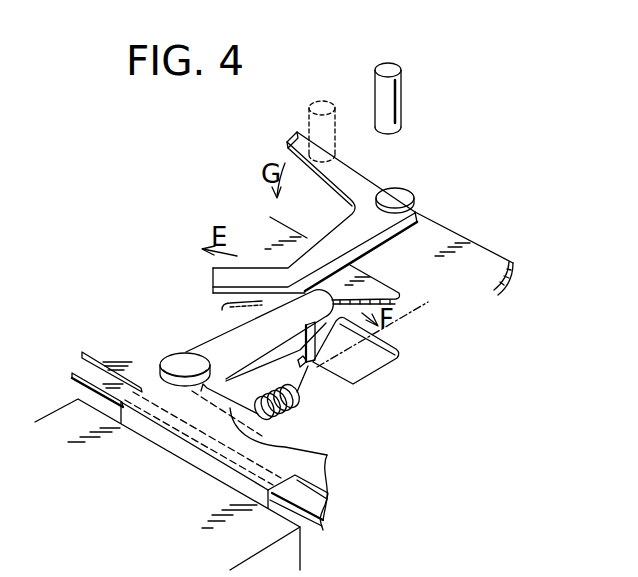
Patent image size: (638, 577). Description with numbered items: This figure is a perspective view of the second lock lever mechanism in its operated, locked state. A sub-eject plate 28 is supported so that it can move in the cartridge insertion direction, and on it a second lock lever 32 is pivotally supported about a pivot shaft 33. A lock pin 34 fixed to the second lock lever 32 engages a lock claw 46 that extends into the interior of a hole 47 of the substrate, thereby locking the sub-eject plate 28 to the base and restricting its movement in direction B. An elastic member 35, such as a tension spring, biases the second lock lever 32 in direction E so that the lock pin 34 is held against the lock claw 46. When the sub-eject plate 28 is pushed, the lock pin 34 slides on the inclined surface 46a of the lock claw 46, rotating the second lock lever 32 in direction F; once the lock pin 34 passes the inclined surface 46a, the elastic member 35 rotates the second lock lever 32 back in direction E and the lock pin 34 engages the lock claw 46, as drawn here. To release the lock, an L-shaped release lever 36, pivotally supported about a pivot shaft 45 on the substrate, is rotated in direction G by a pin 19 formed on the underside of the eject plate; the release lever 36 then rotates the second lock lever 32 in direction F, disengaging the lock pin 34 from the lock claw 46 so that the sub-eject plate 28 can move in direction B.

The pin 19 is at (398, 98).
The sub-eject plate 28 is at (115, 342).
The second lock lever 32 is at (208, 335).
The pivot shaft 33 is at (179, 362).
The lock pin 34 is at (386, 371).
The elastic member 35 is at (303, 398).
The release lever 36 is at (362, 177).
The pivot shaft 45 is at (403, 196).
The lock claw 46 is at (316, 356).
The inclined surface 46a is at (304, 392).
The hole 47 is at (397, 347).